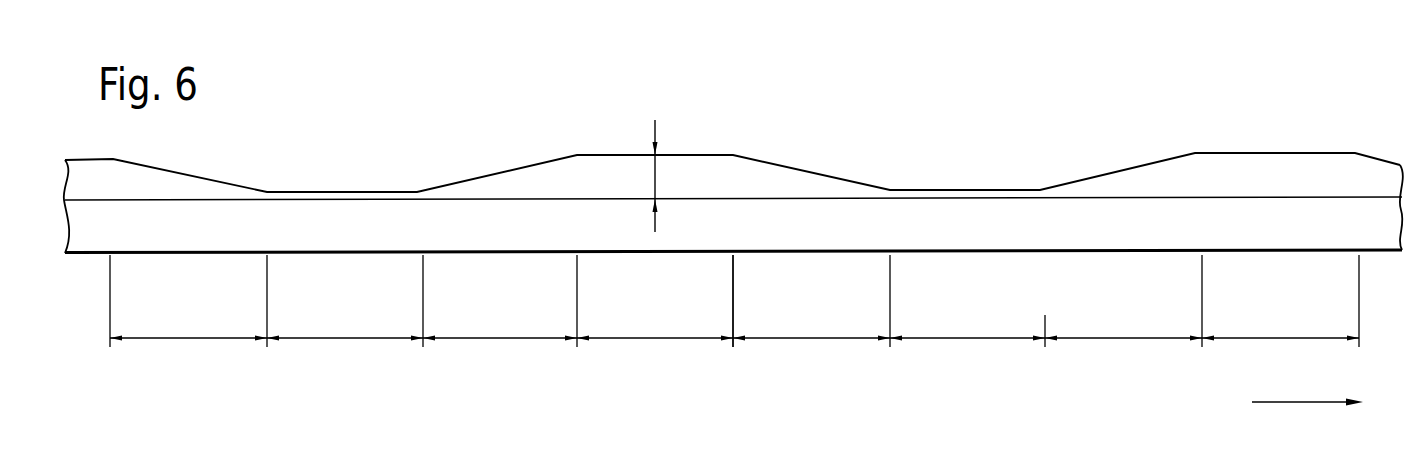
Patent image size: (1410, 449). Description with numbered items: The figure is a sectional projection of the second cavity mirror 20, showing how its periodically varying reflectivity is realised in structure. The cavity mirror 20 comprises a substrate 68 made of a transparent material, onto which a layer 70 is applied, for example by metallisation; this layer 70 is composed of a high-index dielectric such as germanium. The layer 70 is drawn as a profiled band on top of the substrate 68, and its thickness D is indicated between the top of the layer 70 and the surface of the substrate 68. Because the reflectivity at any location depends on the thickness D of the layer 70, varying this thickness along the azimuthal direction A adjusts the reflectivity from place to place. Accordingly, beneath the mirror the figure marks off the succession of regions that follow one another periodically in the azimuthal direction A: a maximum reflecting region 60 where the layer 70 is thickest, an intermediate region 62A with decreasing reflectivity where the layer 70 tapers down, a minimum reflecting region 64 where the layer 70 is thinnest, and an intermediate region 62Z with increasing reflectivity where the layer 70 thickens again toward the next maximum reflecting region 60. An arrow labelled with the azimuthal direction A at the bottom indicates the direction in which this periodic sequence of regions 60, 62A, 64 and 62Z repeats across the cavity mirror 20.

The second cavity mirror 20 is at (733, 171).
The substrate 68 is at (487, 225).
The layer 70 is at (590, 175).
The thickness of the layer D is at (657, 176).
The intermediate region with decreasing reflectivity 62A is at (180, 340).
The minimum reflecting region 64 is at (345, 340).
The intermediate region with increasing reflectivity 62Z is at (495, 340).
The maximum reflecting region 60 is at (657, 340).
The azimuthal direction A is at (1278, 403).